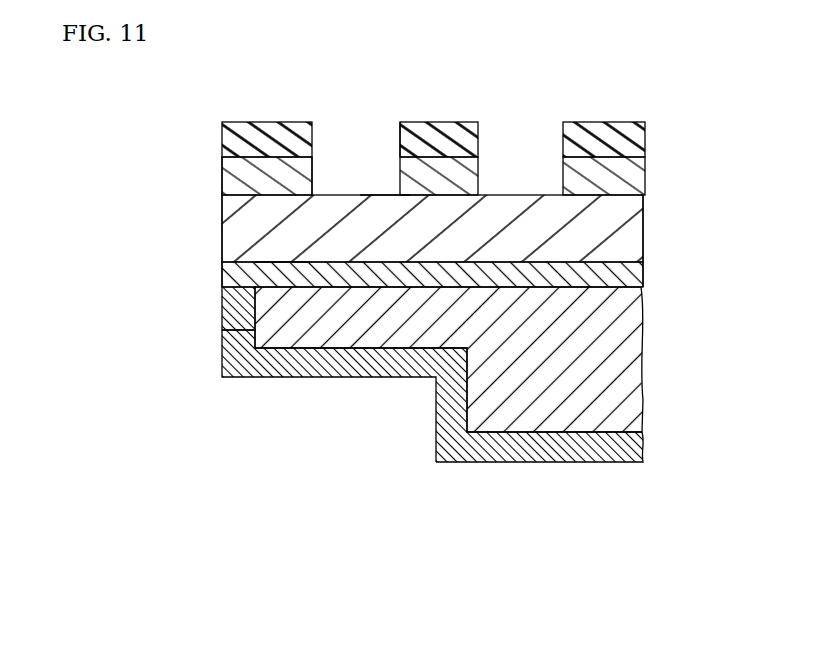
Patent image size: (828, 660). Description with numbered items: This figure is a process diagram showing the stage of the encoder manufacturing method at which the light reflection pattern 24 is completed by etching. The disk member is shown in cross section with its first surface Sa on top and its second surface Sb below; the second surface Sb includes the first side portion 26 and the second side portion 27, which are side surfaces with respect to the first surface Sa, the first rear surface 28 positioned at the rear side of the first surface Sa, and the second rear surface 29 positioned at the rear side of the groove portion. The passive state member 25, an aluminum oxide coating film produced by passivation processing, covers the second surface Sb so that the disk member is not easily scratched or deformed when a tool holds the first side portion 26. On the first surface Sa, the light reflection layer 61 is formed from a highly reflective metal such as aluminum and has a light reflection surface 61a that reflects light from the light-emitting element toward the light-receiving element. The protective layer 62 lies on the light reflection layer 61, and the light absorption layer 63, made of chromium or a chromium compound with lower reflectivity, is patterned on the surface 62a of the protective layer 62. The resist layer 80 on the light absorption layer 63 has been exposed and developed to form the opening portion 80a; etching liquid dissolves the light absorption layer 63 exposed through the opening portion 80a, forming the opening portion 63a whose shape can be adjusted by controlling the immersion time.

The resist layer 80 is at (268, 122).
The opening portion 80a is at (399, 139).
The light absorption layer 63 is at (222, 175).
The opening portion 63a is at (314, 170).
The protective layer 62 is at (222, 228).
The light reflection layer 61 is at (222, 280).
The light reflection pattern 24 is at (113, 157).
The first surface Sa is at (638, 260).
The light reflection surface 61a is at (283, 390).
The surface of the protective layer 62a is at (383, 390).
The first rear surface 28 is at (308, 350).
The first side portion 26 is at (222, 332).
The second side portion 27 is at (437, 403).
The second rear surface 29 is at (437, 458).
The passive state member 25 is at (603, 462).
The second surface Sb is at (368, 517).